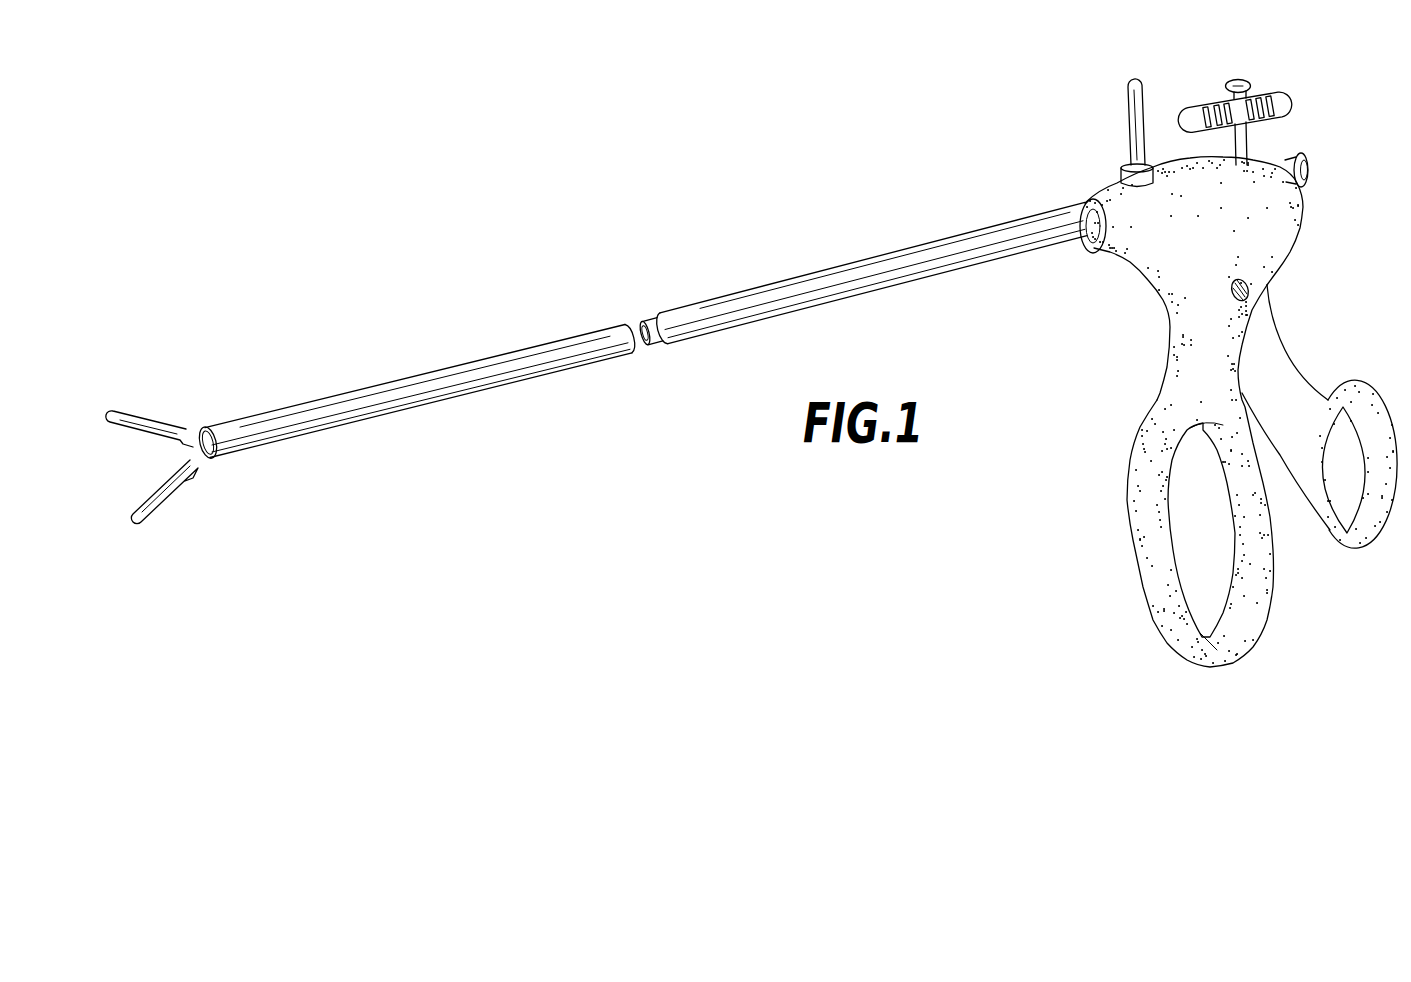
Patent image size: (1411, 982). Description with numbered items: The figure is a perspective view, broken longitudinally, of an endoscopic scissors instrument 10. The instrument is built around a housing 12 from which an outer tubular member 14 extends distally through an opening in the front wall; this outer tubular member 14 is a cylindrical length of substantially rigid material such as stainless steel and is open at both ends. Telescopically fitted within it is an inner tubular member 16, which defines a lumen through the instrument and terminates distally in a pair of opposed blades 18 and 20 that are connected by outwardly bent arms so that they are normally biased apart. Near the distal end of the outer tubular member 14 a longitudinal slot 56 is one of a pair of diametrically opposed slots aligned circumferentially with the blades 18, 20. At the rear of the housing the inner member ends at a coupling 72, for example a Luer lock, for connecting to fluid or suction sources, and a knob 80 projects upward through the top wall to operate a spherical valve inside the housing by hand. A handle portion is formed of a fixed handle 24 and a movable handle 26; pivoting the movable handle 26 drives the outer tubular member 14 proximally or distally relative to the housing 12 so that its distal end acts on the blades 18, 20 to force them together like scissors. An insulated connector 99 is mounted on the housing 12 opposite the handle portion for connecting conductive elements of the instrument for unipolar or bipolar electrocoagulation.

The endoscopic scissors instrument 10 is at (1217, 344).
The housing 12 is at (1168, 387).
The outer tubular member 14 is at (646, 329).
The inner tubular member 16 is at (651, 300).
The blade 18 is at (149, 398).
The blade 20 is at (164, 521).
The fixed handle 24 is at (1171, 476).
The movable handle 26 is at (1322, 416).
The longitudinal slot 56 is at (210, 405).
The coupling 72 is at (1316, 159).
The knob 80 is at (1237, 93).
The insulated connector 99 is at (1156, 106).